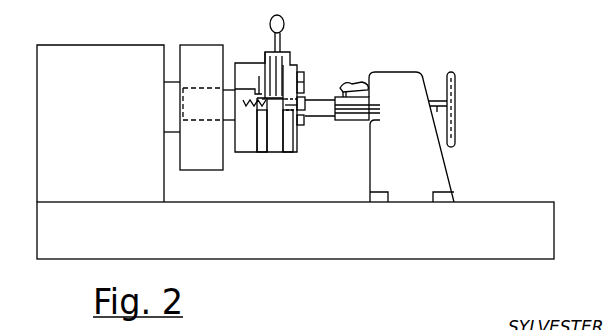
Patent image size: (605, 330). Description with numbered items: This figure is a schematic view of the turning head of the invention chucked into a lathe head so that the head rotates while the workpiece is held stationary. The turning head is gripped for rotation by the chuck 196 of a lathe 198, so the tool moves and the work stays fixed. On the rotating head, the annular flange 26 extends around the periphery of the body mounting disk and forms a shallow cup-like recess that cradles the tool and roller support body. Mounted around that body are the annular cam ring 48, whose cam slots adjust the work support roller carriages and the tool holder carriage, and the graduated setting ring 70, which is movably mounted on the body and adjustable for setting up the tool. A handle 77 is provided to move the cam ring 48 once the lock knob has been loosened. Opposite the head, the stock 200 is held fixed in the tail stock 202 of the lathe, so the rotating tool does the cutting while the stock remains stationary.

The lathe 198 is at (104, 45).
The chuck 196 is at (197, 45).
The annular flange 26 is at (250, 60).
The handle 77 is at (285, 24).
The graduated setting ring 70 is at (260, 154).
The cam ring 48 is at (283, 154).
The stock 200 is at (321, 98).
The tail stock 202 is at (392, 72).